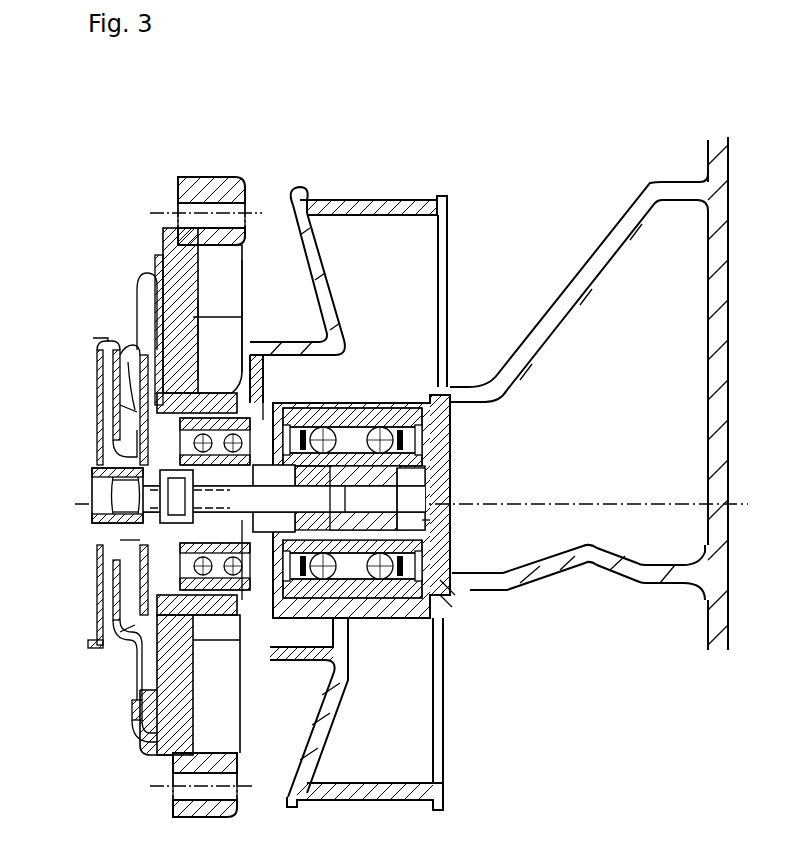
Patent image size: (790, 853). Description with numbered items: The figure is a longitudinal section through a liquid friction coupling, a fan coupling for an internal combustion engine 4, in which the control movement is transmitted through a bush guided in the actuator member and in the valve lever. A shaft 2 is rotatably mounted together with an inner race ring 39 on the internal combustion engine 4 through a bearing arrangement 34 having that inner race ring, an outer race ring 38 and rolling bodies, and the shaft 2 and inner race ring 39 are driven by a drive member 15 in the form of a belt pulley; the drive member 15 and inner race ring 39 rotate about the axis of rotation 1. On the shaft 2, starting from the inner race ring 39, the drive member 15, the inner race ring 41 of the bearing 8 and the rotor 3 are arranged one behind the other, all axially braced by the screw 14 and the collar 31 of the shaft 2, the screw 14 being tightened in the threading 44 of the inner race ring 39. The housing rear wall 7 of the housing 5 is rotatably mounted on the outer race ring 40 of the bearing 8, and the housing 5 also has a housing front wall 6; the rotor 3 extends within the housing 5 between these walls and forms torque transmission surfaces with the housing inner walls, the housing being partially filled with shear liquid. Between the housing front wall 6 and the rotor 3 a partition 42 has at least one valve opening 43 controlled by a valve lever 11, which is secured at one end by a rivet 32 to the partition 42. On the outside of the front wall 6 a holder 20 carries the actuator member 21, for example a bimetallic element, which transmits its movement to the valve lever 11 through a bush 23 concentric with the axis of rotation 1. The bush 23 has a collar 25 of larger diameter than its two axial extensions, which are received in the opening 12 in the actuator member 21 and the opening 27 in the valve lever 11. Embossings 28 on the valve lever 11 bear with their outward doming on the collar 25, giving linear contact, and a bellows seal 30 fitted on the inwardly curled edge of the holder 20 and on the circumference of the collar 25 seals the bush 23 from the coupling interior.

The axis of rotation 1 is at (643, 503).
The shaft 2 is at (218, 510).
The rotor 3 is at (220, 330).
The internal combustion engine 4 is at (645, 205).
The housing 5 is at (100, 148).
The housing front wall 6 is at (135, 697).
The housing rear wall 7 is at (180, 245).
The bearing 8 is at (213, 415).
The valve lever 11 is at (135, 420).
The opening in the actuator member 12 is at (86, 456).
The screw 14 is at (242, 585).
The drive member 15 is at (357, 200).
The holder 20 is at (110, 582).
The actuator member 21 is at (96, 364).
The bush 23 is at (89, 483).
The collar 25 is at (135, 478).
The opening in the valve lever 27 is at (118, 352).
The embossings 28 is at (120, 512).
The bellows seal 30 is at (120, 412).
The collar of the shaft 31 is at (130, 543).
The rivet 32 is at (133, 632).
The bearing arrangement 34 is at (440, 437).
The outer race ring 38 is at (415, 600).
The inner race ring 39 is at (430, 524).
The outer race ring of the bearing 40 is at (273, 403).
The inner race ring of the bearing 41 is at (270, 417).
The partition 42 is at (132, 330).
The valve opening 43 is at (222, 345).
The threading 44 is at (430, 487).